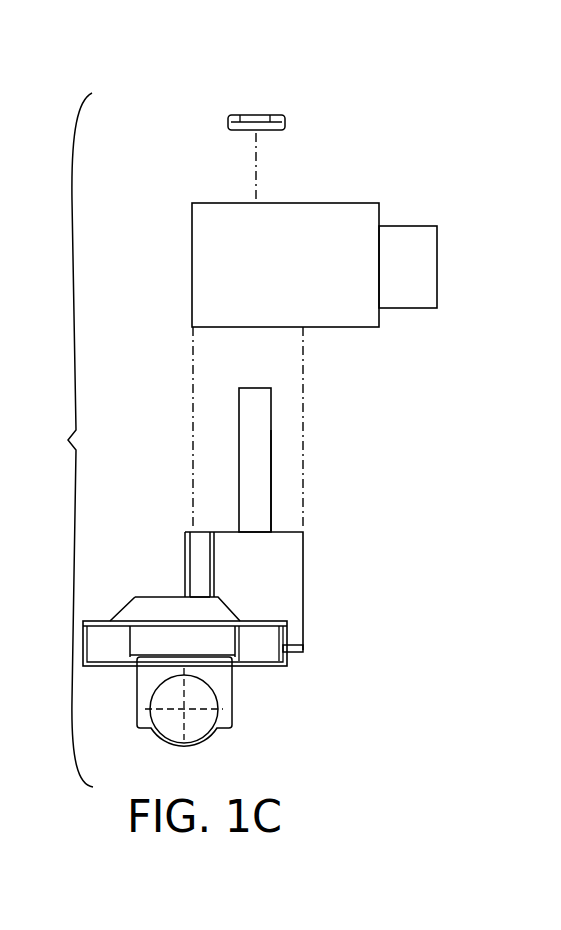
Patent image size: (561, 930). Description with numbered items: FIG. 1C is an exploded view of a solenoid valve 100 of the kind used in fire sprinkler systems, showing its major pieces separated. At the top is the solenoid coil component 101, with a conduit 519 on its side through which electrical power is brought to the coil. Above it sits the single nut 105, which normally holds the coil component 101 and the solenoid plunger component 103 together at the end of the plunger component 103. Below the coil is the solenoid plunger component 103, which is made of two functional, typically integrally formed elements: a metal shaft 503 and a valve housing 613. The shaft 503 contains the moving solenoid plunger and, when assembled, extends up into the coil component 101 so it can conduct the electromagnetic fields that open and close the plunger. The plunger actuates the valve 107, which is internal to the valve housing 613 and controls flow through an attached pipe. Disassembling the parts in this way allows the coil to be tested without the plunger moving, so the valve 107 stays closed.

The solenoid valve 100 is at (442, 131).
The solenoid coil component 101 is at (380, 214).
The solenoid plunger component 103 is at (272, 412).
The nut 105 is at (249, 113).
The valve 107 is at (185, 745).
The shaft 503 is at (272, 445).
The conduit 519 is at (438, 289).
The valve housing 613 is at (303, 651).